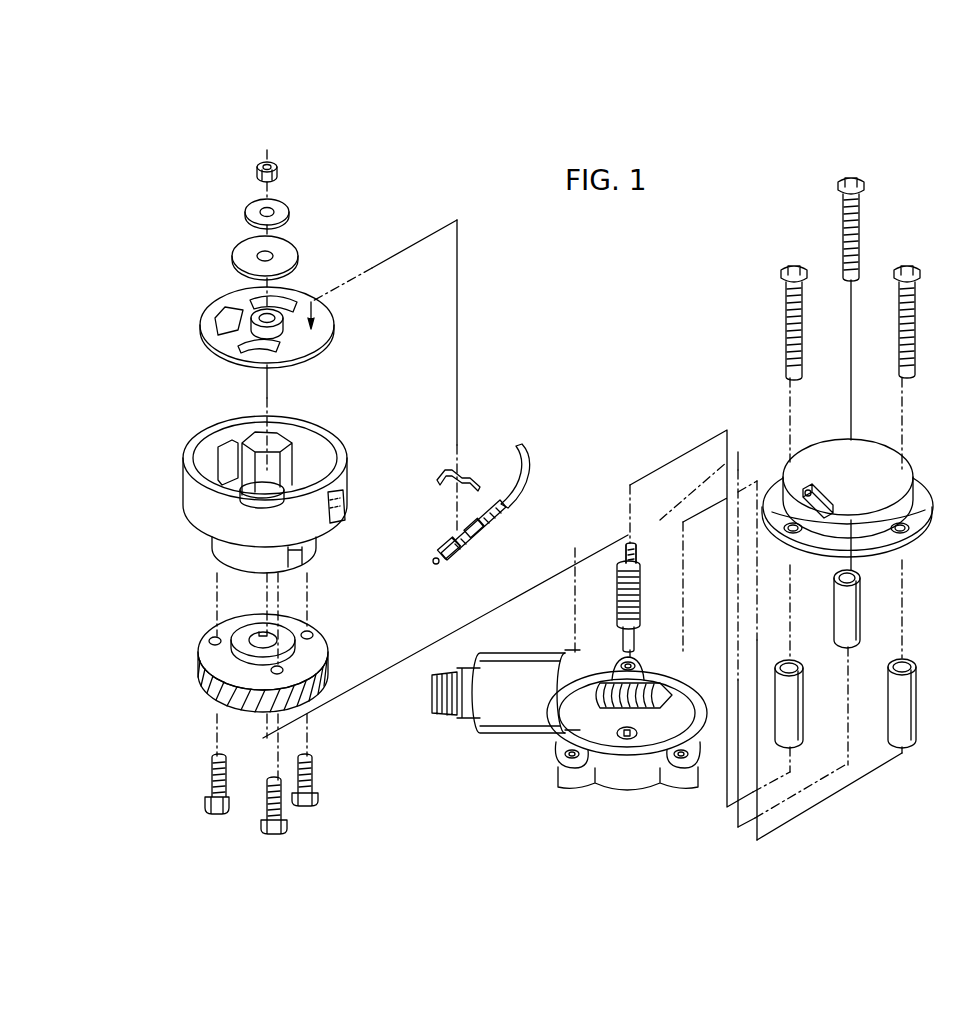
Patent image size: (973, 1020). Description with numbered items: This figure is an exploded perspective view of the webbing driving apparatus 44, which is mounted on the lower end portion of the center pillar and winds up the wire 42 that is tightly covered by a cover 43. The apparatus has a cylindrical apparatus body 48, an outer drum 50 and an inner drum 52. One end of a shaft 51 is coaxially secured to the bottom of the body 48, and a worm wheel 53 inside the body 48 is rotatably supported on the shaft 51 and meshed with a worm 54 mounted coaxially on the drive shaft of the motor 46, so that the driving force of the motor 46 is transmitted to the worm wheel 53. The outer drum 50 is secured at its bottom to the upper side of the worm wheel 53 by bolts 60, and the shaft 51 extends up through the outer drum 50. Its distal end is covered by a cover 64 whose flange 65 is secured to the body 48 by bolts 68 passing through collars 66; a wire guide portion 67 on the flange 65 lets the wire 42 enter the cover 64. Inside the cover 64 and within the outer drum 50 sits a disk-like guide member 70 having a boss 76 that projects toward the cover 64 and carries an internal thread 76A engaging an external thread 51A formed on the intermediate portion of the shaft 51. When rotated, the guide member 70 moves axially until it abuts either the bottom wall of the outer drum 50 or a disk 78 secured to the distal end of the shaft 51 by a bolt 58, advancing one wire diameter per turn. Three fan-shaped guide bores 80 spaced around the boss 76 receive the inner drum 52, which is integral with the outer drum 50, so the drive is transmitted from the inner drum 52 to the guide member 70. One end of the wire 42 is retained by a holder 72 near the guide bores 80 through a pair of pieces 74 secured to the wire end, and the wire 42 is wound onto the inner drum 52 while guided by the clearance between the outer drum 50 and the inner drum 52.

The wire 42 is at (498, 513).
The cover 43 is at (527, 462).
The webbing driving apparatus 44 is at (507, 240).
The motor 46 is at (517, 672).
The apparatus body 48 is at (627, 775).
The outer drum 50 is at (188, 517).
The shaft 51 is at (613, 627).
The external thread 51A is at (643, 573).
The inner drum 52 is at (282, 433).
The worm wheel 53 is at (218, 660).
The worm 54 is at (638, 687).
The bolt 58 is at (278, 172).
The bolts 60 is at (205, 803).
The cover 64 is at (875, 450).
The flange 65 is at (920, 488).
The collars 66 is at (853, 602).
The wire guide portion 67 is at (822, 520).
The bolts 68 is at (862, 226).
The guide member 70 is at (327, 322).
The holder 72 is at (465, 470).
The pieces 74 is at (483, 535).
The boss 76 is at (250, 302).
The internal thread 76A is at (283, 320).
The disk 78 is at (243, 247).
The guide bores 80 is at (227, 313).